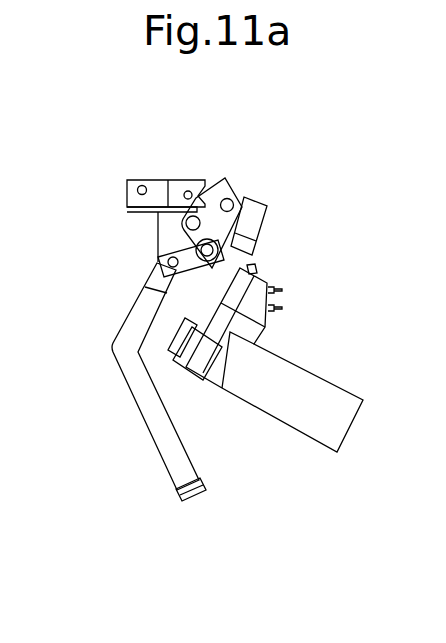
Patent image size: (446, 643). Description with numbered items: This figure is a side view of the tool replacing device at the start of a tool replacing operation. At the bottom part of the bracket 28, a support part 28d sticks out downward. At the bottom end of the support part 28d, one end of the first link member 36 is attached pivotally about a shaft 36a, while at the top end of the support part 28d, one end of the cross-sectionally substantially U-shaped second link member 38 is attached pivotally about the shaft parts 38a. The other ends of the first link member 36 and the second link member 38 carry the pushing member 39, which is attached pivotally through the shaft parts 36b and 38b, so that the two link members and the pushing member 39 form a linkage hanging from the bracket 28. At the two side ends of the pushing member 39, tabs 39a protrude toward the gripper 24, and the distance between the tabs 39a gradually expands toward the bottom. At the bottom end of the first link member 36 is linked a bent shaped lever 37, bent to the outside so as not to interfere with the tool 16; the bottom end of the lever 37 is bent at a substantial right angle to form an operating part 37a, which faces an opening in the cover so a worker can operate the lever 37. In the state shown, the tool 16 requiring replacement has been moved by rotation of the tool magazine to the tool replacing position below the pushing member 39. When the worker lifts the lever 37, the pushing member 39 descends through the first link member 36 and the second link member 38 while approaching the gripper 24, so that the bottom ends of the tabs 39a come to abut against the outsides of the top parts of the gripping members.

The bracket 28 is at (155, 187).
The support part 28d is at (158, 231).
The second link member 38 is at (217, 182).
The shaft parts 38a is at (180, 222).
The shaft part 38b is at (232, 185).
The pushing member 39 is at (251, 198).
The tabs 39a is at (263, 213).
The first link member 36 is at (165, 253).
The shaft 36a is at (166, 268).
The shaft part 36b is at (226, 257).
The gripper 24 is at (288, 292).
The tool 16 is at (300, 362).
The lever 37 is at (128, 387).
The operating part 37a is at (197, 500).